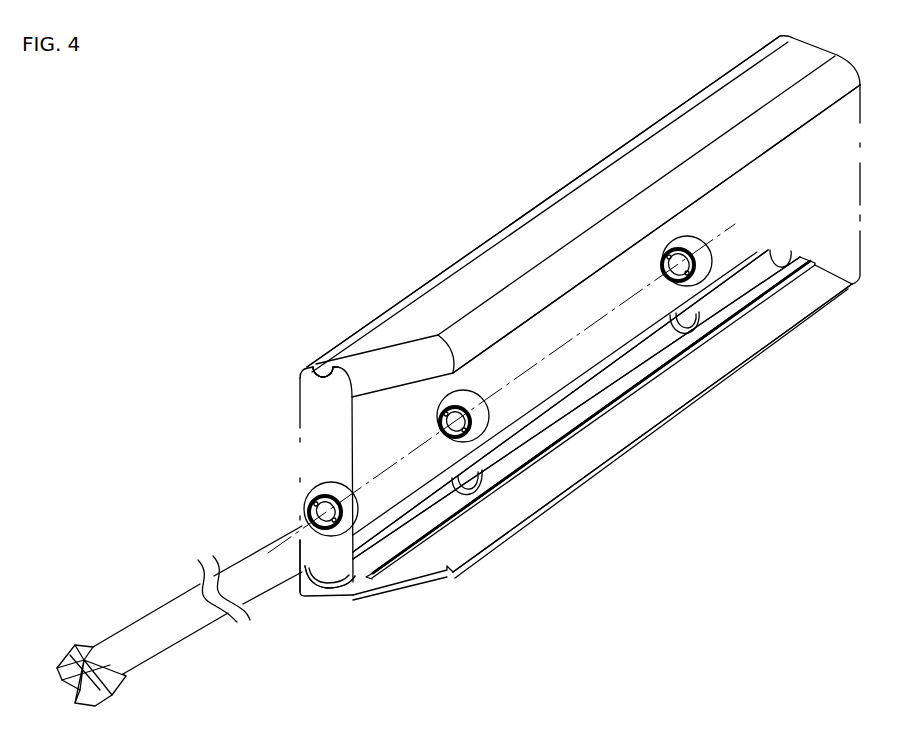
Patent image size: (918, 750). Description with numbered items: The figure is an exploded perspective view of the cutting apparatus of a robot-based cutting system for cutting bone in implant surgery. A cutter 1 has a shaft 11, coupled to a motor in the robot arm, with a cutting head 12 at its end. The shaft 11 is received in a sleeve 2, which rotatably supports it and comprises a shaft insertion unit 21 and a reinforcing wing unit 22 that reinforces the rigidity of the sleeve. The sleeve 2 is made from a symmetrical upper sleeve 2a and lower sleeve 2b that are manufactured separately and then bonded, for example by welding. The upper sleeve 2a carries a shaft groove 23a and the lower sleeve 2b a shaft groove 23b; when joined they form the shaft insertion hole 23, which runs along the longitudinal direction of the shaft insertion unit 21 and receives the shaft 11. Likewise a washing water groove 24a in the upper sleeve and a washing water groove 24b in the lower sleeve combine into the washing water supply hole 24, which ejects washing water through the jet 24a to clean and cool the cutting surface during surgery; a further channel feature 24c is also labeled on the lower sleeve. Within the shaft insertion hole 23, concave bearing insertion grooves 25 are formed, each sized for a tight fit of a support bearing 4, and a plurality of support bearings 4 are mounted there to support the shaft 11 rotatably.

The cutter 1 is at (179, 624).
The shaft 11 is at (142, 650).
The cutting head 12 is at (117, 683).
The sleeve 2 is at (693, 518).
The upper sleeve 2a is at (588, 280).
The lower sleeve 2b is at (610, 460).
The shaft insertion unit 21 is at (312, 376).
The reinforcing wing unit 22 is at (457, 333).
The shaft insertion hole 23 is at (223, 436).
The shaft groove 23a is at (318, 372).
The shaft groove 23b is at (305, 527).
The washing water supply hole 24 is at (477, 626).
The washing water groove 24a is at (442, 570).
The washing water groove 24b is at (403, 571).
The channel end opening 24c is at (347, 596).
The bearing insertion groove 25 is at (300, 598).
The support bearing 4 is at (468, 400).